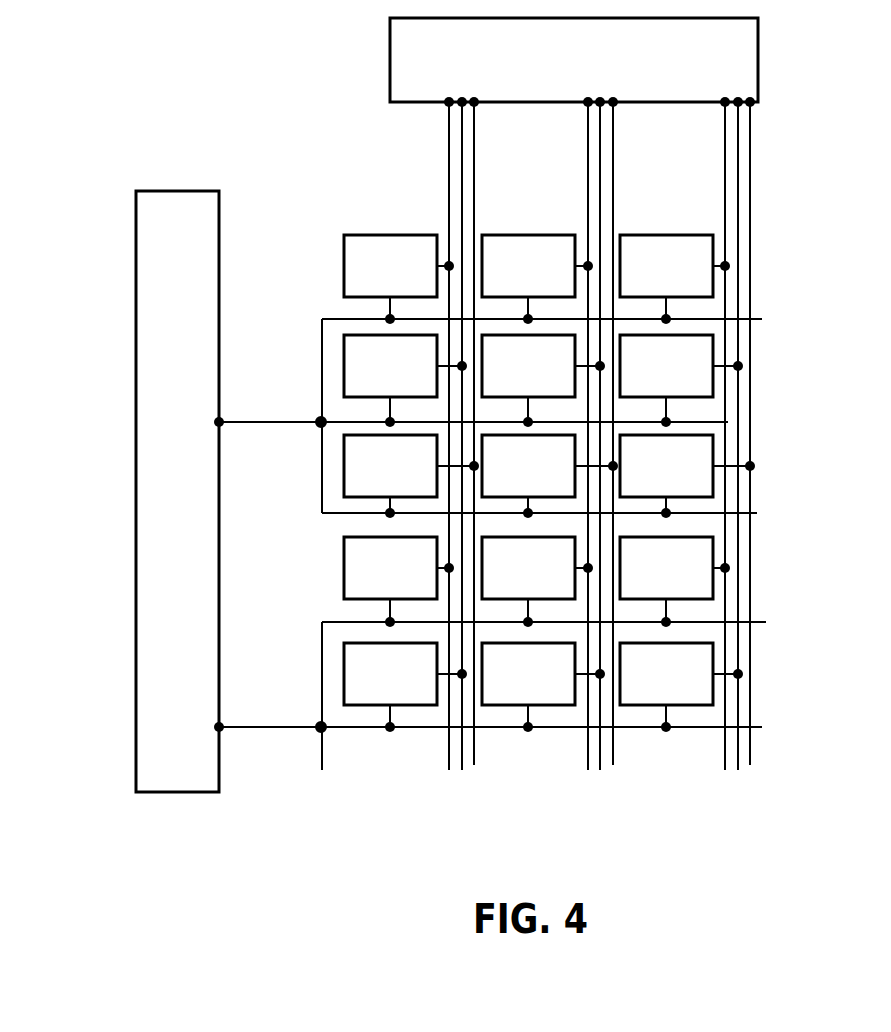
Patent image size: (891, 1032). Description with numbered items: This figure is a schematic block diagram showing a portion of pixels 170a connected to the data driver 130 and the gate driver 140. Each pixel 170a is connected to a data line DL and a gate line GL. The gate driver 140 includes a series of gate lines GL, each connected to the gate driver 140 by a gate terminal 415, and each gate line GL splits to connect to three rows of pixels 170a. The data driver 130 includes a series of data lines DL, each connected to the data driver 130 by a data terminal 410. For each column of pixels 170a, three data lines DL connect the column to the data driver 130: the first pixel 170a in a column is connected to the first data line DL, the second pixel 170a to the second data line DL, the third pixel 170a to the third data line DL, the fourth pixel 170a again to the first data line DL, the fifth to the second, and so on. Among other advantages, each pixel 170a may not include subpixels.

The data driver 130 is at (574, 60).
The gate driver 140 is at (177, 491).
The pixel 170a is at (399, 279).
The data terminal 410 is at (753, 105).
The gate terminal 415 is at (221, 729).
The data line DL is at (448, 152).
The gate line GL is at (283, 420).